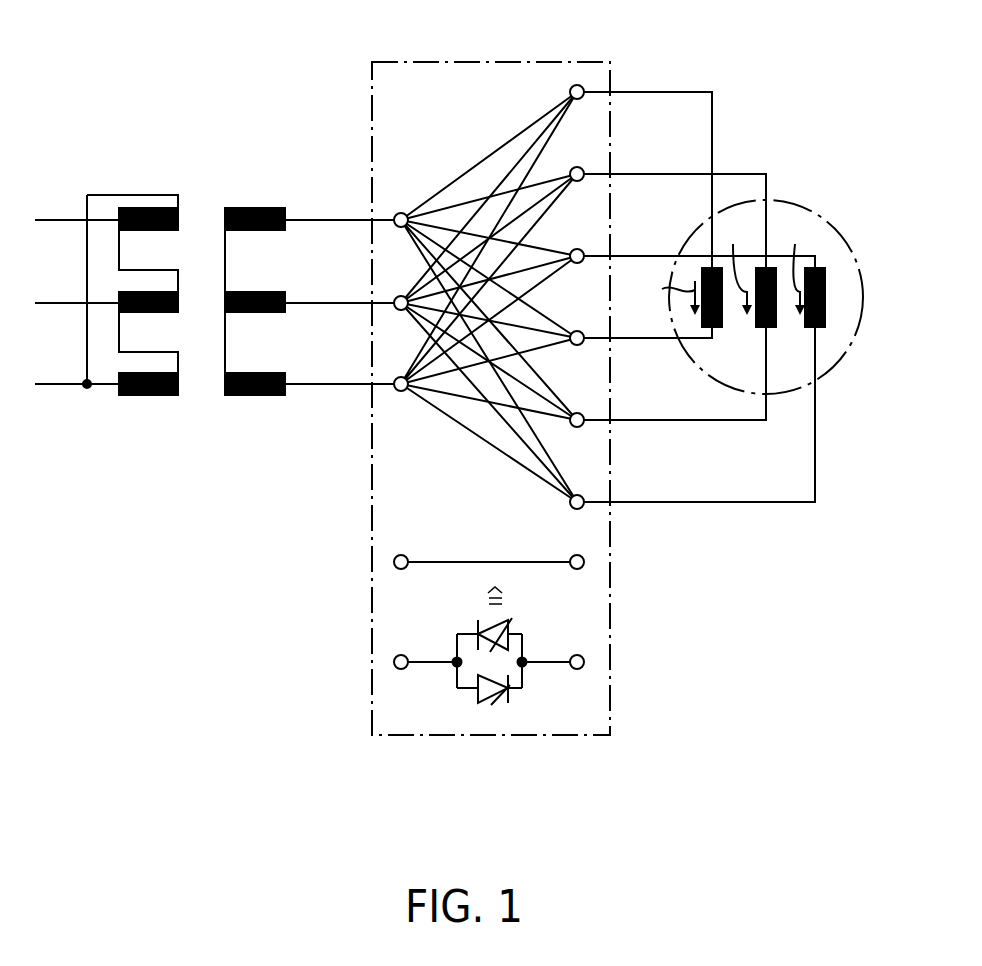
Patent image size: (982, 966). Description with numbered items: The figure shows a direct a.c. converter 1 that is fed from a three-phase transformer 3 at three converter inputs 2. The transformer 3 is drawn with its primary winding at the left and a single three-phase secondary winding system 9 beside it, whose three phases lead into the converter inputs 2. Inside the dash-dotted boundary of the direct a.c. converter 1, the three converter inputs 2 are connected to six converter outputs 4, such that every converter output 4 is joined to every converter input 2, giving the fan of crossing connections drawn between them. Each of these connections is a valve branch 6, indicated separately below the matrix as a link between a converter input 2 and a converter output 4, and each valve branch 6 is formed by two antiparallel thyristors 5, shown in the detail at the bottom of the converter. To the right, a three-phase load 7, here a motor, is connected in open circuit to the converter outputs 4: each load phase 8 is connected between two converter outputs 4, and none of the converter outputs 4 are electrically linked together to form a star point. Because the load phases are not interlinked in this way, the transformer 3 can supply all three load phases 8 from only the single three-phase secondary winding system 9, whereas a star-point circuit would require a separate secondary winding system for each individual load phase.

The direct a.c. converter 1 is at (487, 62).
The converter inputs 2 is at (401, 392).
The three-phase transformer 3 is at (206, 176).
The converter outputs 4 is at (576, 555).
The antiparallel thyristors 5 is at (510, 620).
The valve branch 6 is at (508, 460).
The three-phase load 7 is at (838, 236).
The load phase 8 is at (827, 305).
The three-phase secondary winding system 9 is at (253, 190).